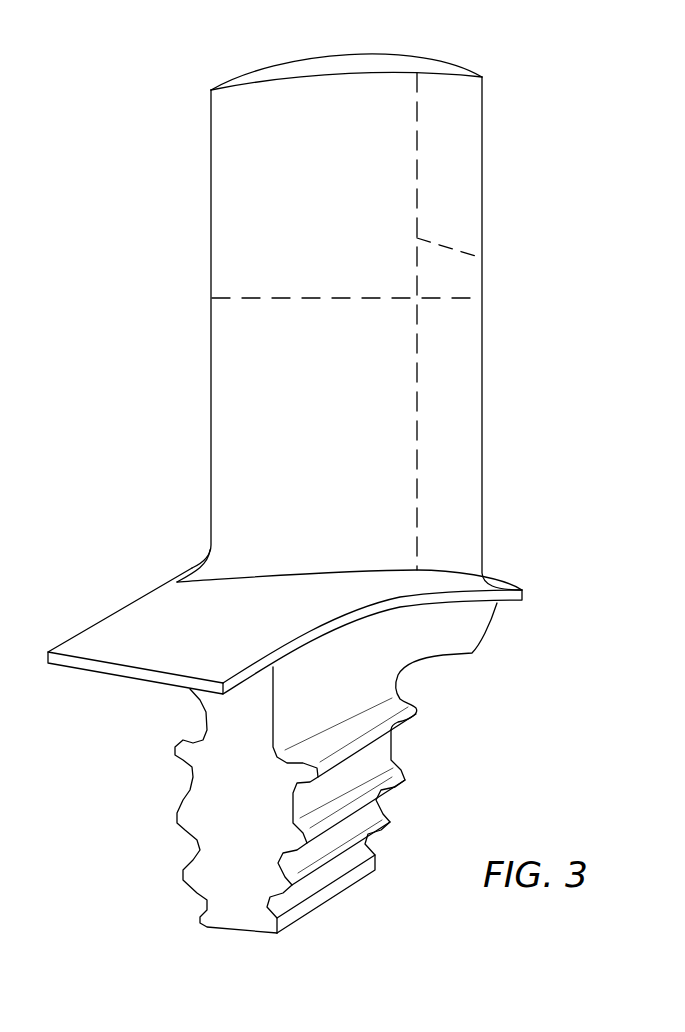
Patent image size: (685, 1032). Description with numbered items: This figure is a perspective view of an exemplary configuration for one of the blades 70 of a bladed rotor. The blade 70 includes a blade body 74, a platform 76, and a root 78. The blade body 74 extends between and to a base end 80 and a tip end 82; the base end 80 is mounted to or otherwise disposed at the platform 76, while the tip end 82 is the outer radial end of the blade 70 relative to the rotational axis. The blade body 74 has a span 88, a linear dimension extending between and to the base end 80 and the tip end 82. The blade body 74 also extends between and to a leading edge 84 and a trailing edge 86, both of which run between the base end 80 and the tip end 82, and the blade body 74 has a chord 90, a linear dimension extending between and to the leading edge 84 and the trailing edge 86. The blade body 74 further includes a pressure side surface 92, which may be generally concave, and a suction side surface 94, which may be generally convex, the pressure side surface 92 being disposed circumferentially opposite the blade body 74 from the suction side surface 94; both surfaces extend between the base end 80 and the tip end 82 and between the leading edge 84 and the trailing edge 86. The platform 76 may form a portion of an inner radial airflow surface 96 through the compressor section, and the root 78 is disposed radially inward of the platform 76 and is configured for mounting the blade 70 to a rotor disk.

The blade 70 is at (560, 145).
The blade body 74 is at (518, 347).
The platform 76 is at (566, 586).
The root 78 is at (435, 747).
The base end 80 is at (243, 583).
The tip end 82 is at (377, 63).
The leading edge 84 is at (210, 185).
The trailing edge 86 is at (483, 223).
The span 88 is at (492, 261).
The chord 90 is at (372, 300).
The pressure side surface 92 is at (447, 482).
The suction side surface 94 is at (277, 62).
The inner radial airflow surface 96 is at (140, 620).